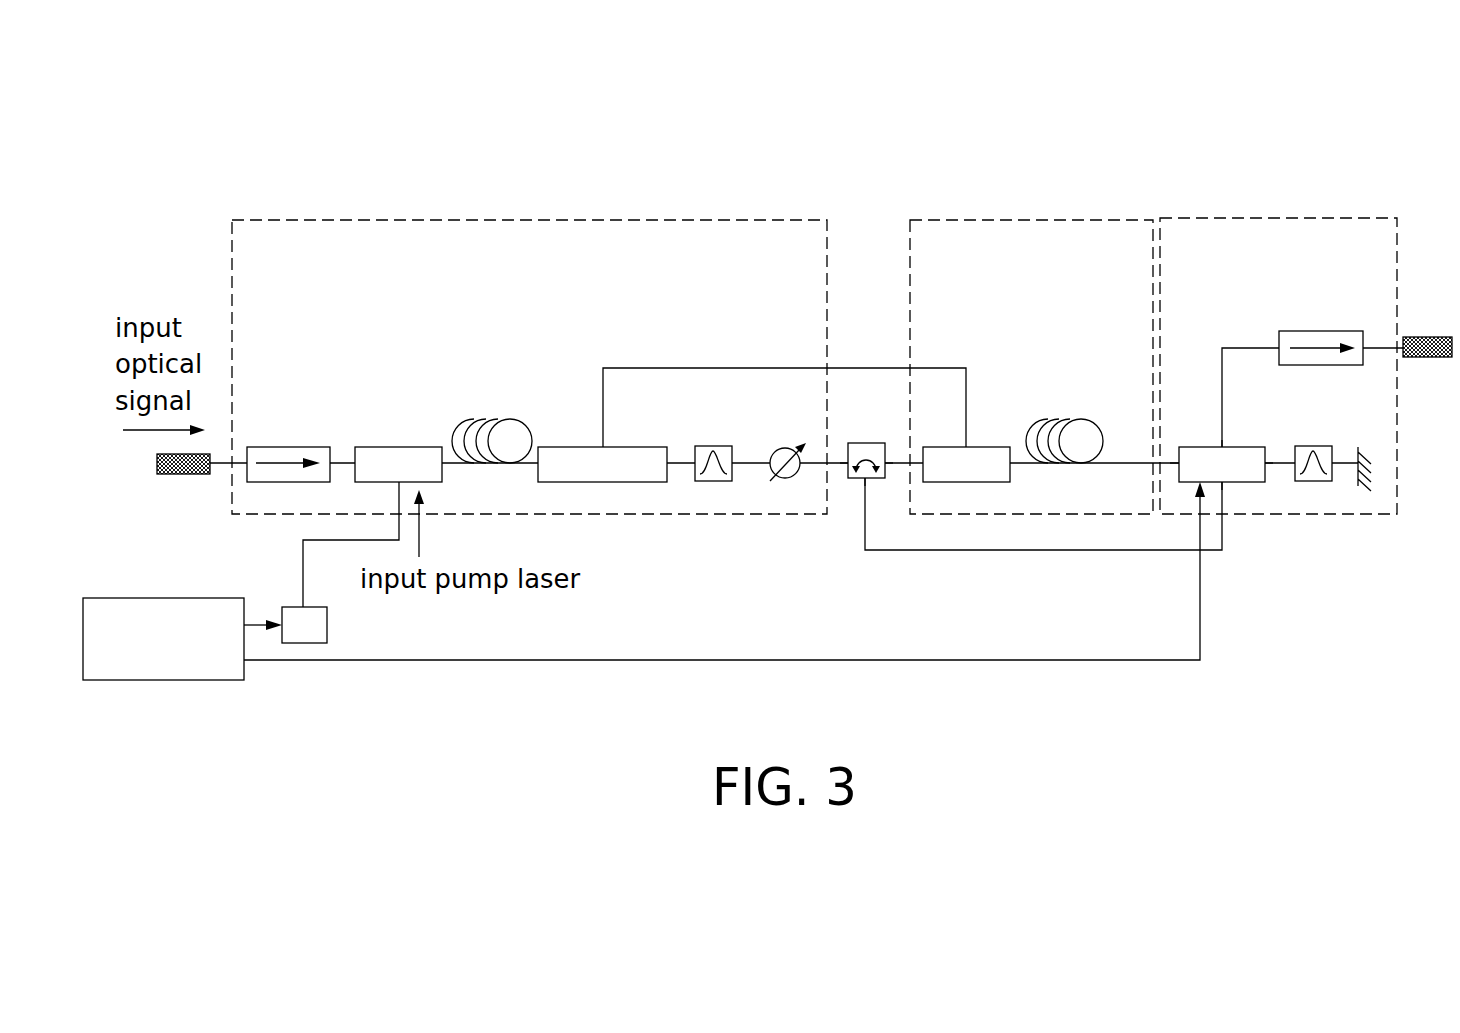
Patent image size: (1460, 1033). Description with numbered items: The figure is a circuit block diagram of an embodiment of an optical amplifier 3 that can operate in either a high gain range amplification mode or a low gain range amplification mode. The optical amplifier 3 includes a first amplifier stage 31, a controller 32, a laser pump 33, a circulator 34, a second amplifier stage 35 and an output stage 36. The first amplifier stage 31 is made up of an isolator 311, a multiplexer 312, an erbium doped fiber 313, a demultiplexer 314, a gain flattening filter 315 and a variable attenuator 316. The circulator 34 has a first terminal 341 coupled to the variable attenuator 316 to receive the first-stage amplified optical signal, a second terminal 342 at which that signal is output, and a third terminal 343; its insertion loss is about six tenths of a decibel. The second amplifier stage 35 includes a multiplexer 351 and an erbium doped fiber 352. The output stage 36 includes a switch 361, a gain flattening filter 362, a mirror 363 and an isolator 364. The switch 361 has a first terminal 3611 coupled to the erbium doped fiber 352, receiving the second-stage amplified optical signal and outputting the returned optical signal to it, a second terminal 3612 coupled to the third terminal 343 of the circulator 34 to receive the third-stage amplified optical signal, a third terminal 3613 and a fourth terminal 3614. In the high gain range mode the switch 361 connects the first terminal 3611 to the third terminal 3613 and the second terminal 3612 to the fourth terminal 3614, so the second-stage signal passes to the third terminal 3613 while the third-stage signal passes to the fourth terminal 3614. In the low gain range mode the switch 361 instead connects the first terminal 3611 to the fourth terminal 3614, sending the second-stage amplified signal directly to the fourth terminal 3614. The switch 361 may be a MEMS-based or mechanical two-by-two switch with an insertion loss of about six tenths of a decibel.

The optical amplifier 3 is at (505, 163).
The first amplifier stage 31 is at (291, 217).
The isolator 311 is at (284, 446).
The multiplexer 312 is at (398, 446).
The erbium doped fiber 313 is at (488, 416).
The demultiplexer 314 is at (560, 446).
The gain flattening filter 315 is at (712, 445).
The variable attenuator 316 is at (776, 447).
The controller 32 is at (158, 598).
The laser pump 33 is at (327, 625).
The circulator 34 is at (865, 442).
The first terminal 341 is at (848, 466).
The second terminal 342 is at (886, 469).
The third terminal 343 is at (870, 481).
The second amplifier stage 35 is at (965, 218).
The multiplexer 351 is at (990, 446).
The erbium doped fiber 352 is at (1069, 418).
The output stage 36 is at (1195, 216).
The switch 361 is at (1195, 446).
The first terminal 3611 is at (1180, 463).
The second terminal 3612 is at (1225, 483).
The third terminal 3613 is at (1266, 465).
The fourth terminal 3614 is at (1225, 447).
The gain flattening filter 362 is at (1318, 446).
The mirror 363 is at (1362, 447).
The isolator 364 is at (1308, 331).